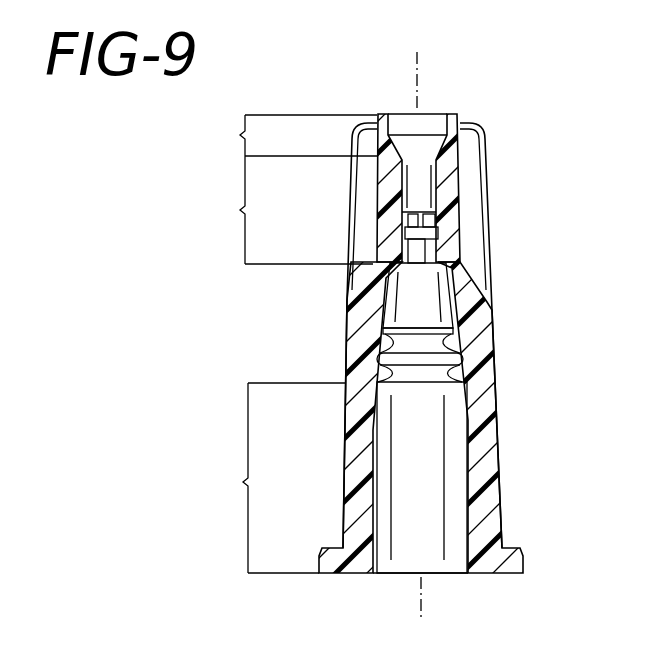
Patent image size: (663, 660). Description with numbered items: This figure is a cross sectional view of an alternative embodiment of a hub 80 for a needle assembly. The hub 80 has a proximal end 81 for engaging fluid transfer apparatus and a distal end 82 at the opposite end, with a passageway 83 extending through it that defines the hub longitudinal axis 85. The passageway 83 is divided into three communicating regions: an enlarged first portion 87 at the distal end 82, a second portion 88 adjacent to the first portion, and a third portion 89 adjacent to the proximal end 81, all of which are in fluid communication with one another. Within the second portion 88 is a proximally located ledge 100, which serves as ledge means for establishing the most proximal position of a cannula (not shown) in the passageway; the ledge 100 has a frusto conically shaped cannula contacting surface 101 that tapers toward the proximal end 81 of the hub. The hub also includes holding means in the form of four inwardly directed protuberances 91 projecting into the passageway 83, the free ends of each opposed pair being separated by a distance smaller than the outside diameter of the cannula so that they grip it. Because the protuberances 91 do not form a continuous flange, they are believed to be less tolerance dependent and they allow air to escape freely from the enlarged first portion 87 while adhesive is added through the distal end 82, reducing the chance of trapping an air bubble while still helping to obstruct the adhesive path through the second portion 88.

The hub 80 is at (112, 246).
The proximal end 81 is at (506, 530).
The distal end 82 is at (457, 120).
The passageway 83 is at (437, 542).
The hub longitudinal axis 85 is at (418, 78).
The enlarged first portion 87 is at (292, 135).
The second portion 88 is at (290, 210).
The third portion 89 is at (276, 478).
The inwardly directed protuberances 91 is at (400, 138).
The ledge 100 is at (438, 235).
The frusto conically shaped cannula contacting surface 101 is at (406, 240).